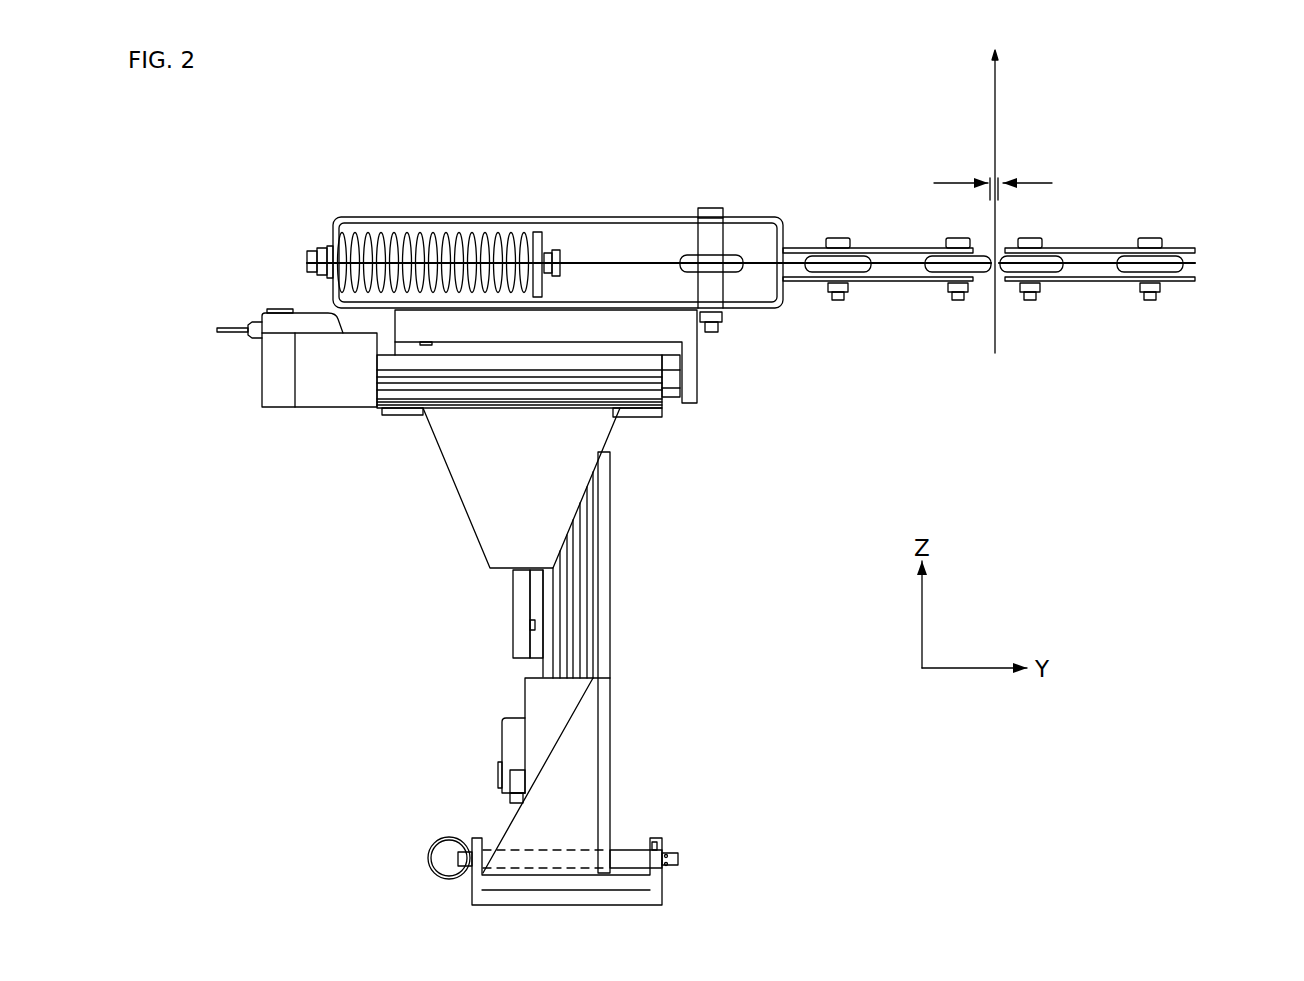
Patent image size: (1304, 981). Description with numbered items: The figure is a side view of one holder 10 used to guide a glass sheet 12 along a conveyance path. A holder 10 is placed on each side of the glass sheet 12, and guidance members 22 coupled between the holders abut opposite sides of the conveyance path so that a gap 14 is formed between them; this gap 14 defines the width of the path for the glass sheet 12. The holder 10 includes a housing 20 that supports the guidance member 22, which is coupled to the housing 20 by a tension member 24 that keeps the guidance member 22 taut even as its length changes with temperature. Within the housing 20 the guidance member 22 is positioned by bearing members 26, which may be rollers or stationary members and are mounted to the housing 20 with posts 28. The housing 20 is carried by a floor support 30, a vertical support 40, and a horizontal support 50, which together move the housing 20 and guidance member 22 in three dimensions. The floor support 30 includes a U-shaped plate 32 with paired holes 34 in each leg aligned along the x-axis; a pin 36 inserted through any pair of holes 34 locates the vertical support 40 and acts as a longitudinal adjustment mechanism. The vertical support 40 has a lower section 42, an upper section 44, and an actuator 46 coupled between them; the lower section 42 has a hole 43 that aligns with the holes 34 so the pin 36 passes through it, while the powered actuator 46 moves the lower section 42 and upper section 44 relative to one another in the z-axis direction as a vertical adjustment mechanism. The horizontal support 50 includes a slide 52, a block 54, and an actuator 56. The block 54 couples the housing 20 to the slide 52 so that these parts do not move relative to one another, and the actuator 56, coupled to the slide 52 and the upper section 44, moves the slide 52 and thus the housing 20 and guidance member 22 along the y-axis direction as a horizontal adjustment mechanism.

The holder 10 is at (1097, 599).
The glass sheet 12 is at (995, 103).
The gap 14 is at (1035, 183).
The housing 20 is at (510, 218).
The guidance member 22 is at (640, 262).
The tension member 24 is at (408, 238).
The bearing members 26 is at (743, 262).
The posts 28 is at (716, 210).
The floor support 30 is at (655, 887).
The U-shaped plate 32 is at (620, 897).
The holes 34 is at (655, 848).
The pin 36 is at (460, 857).
The vertical support 40 is at (603, 639).
The lower section 42 is at (602, 543).
The hole 43 is at (569, 850).
The upper section 44 is at (498, 488).
The actuator 46 is at (535, 690).
The horizontal support 50 is at (273, 382).
The slide 52 is at (692, 382).
The block 54 is at (683, 328).
The actuator 56 is at (323, 378).